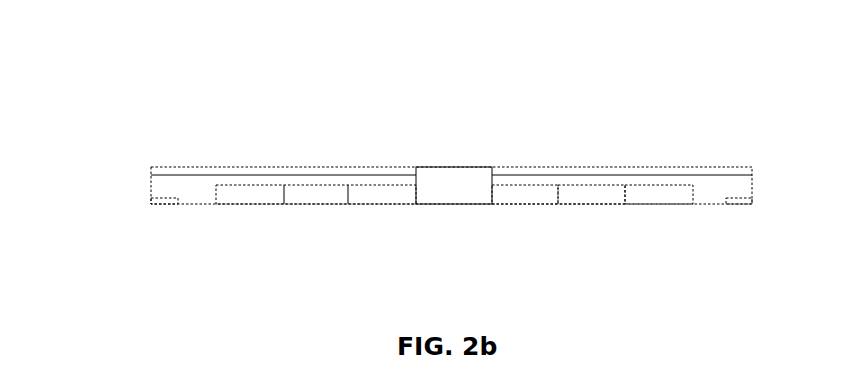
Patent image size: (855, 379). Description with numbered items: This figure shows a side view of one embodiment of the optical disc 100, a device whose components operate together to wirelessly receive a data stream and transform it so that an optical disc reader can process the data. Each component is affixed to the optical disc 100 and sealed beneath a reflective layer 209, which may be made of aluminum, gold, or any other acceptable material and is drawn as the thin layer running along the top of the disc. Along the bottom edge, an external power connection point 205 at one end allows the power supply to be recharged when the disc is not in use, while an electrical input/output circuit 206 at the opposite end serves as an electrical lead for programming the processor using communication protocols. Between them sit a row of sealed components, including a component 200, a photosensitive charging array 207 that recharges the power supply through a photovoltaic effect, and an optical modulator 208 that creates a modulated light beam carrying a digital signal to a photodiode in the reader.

The optical disc 100 is at (147, 96).
The circuit module 200 is at (500, 200).
The external power connection point 205 is at (160, 200).
The electrical input/output circuit 206 is at (738, 200).
The photosensitive charging array 207 is at (570, 200).
The optical modulator 208 is at (645, 200).
The reflective layer 209 is at (640, 172).